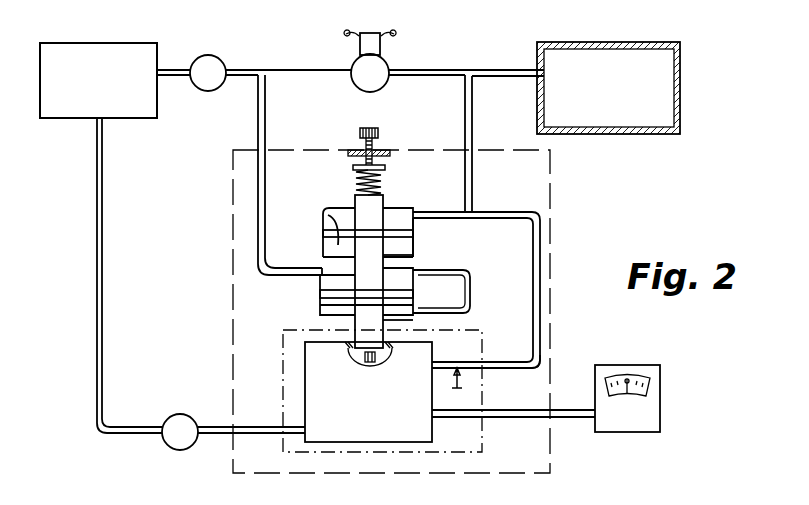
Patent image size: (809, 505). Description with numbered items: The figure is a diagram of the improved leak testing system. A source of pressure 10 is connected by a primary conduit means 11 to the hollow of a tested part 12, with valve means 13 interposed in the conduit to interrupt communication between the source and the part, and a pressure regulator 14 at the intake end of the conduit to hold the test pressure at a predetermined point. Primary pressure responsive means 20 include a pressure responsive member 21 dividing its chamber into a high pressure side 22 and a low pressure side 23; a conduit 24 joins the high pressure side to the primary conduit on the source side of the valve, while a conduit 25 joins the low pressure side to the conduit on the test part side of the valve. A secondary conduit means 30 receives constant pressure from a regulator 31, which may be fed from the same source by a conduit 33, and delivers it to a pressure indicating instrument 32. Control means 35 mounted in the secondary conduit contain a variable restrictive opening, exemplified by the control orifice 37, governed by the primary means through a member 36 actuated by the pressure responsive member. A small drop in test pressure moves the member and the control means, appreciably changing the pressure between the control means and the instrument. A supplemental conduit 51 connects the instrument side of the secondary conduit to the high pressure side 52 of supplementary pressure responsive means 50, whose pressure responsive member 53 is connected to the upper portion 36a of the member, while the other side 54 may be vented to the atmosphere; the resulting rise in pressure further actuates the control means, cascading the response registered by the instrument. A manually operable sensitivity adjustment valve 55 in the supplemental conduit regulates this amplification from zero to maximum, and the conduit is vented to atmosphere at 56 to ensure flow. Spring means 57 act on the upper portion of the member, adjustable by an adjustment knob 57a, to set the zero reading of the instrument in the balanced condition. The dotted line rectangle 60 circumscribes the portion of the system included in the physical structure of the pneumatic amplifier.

The source of pressure 10 is at (79, 108).
The primary conduit means 11 is at (294, 70).
The tested part 12 is at (670, 99).
The valve means 13 is at (386, 63).
The pressure regulator 14 is at (200, 96).
The primary pressure responsive means 20 is at (311, 308).
The pressure responsive member 21 is at (330, 297).
The high pressure side 22 is at (400, 284).
The low pressure side 23 is at (400, 317).
The conduit 24 is at (258, 203).
The conduit 25 is at (464, 115).
The secondary conduit means 30 is at (215, 425).
The regulator 31 is at (178, 449).
The pressure indicating instrument 32 is at (663, 408).
The conduit 33 is at (97, 210).
The control means 35 is at (294, 385).
The member 36 is at (362, 320).
The upper portion of the member 36a is at (378, 257).
The control orifice 37 is at (378, 362).
The supplementary pressure responsive means 50 is at (347, 198).
The supplemental conduit 51 is at (485, 366).
The high pressure side 52 is at (400, 210).
The pressure responsive member 53 is at (322, 232).
The other side 54 is at (333, 215).
The sensitivity adjustment valve 55 is at (463, 383).
The vent 56 is at (557, 363).
The spring means 57 is at (385, 180).
The adjustment knob 57a is at (367, 128).
The dotted line rectangle 60 is at (559, 185).